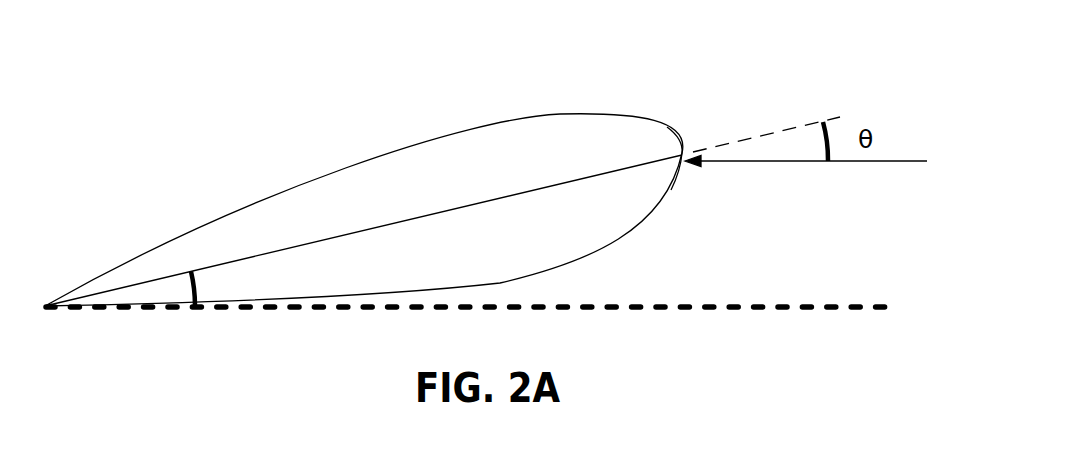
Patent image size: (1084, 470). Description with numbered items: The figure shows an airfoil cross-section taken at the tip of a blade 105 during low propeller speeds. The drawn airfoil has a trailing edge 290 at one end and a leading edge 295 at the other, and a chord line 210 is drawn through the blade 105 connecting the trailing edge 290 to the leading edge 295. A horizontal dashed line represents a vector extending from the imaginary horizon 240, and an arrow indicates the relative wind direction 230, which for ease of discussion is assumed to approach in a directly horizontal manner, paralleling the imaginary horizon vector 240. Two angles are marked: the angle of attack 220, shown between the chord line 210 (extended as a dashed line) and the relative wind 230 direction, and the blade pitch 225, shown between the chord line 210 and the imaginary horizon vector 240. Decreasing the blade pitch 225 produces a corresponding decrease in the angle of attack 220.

The blade 105 is at (352, 147).
The chord line 210 is at (583, 173).
The leading edge 295 is at (677, 123).
The angle of attack (θ) 220 is at (860, 120).
The relative wind direction 230 is at (787, 167).
The blade pitch (φ) 225 is at (236, 288).
The trailing edge 290 is at (60, 322).
The imaginary horizon vector 240 is at (665, 326).